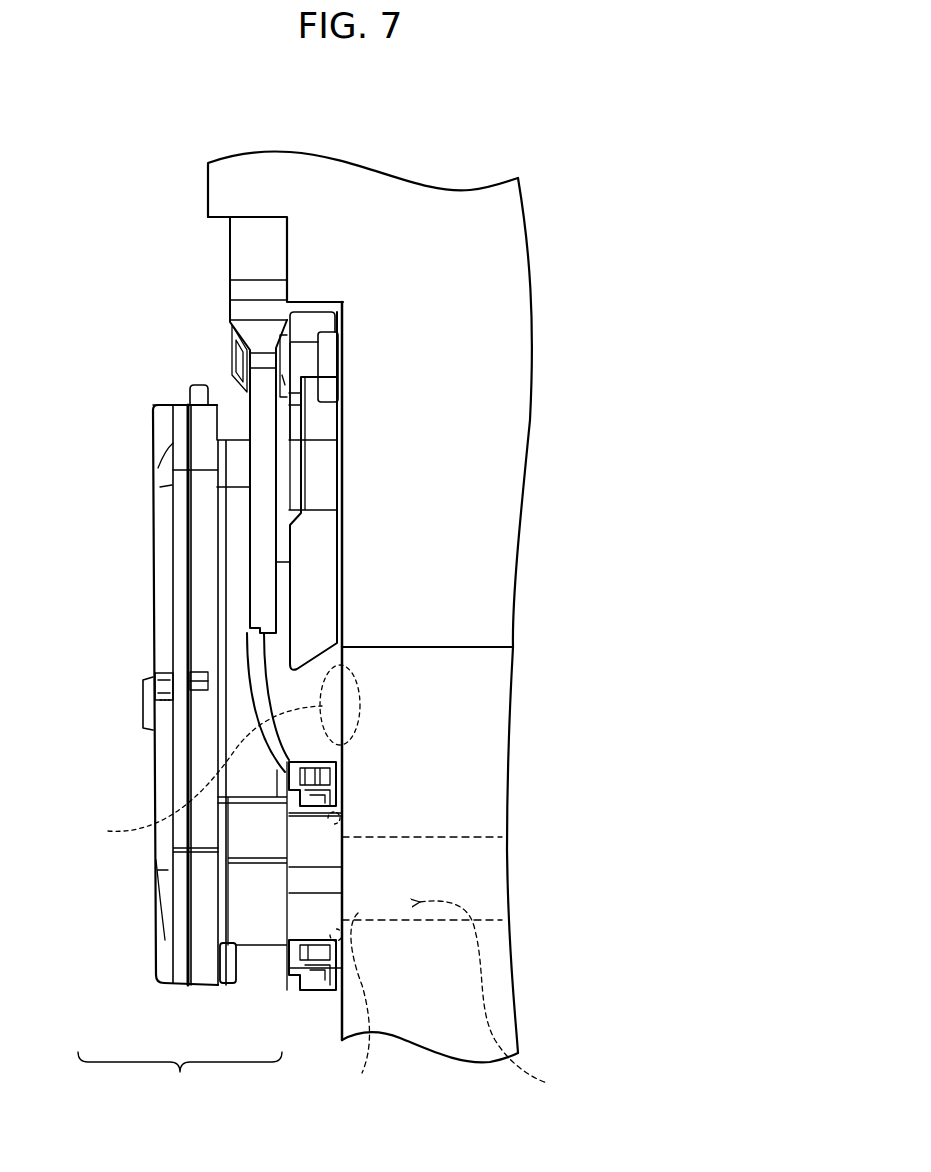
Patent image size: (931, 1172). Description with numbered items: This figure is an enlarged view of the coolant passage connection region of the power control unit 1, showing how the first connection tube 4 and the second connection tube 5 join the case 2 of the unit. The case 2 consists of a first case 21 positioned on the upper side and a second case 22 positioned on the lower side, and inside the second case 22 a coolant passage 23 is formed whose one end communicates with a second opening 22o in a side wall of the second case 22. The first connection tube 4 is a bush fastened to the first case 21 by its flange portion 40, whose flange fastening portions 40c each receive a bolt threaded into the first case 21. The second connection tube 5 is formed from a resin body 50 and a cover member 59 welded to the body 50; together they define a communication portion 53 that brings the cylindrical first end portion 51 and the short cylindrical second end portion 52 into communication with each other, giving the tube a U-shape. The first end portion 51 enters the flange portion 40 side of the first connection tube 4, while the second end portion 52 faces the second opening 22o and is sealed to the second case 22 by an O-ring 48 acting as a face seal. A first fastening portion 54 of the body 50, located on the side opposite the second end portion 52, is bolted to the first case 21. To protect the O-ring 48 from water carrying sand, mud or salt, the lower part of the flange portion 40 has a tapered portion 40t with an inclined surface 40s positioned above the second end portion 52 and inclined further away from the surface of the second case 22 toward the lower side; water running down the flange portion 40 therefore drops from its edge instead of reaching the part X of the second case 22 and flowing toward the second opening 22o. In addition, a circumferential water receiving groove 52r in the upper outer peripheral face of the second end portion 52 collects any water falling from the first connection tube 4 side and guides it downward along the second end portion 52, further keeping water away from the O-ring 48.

The power control unit 1 is at (178, 180).
The case 2 is at (598, 592).
The first case 21 is at (512, 602).
The second case 22 is at (512, 686).
The second opening 22o is at (364, 1010).
The coolant passage 23 is at (503, 999).
The first connection tube 4 is at (255, 488).
The second connection tube 5 is at (180, 1080).
The flange portion 40 is at (315, 545).
The flange fastening portion 40c is at (320, 415).
The inclined surface 40s is at (345, 660).
The tapered portion 40t is at (285, 655).
The O-ring 48 is at (342, 820).
The body 50 is at (253, 937).
The first end portion 51 is at (313, 453).
The second end portion 52 is at (322, 850).
The water receiving groove 52r is at (320, 773).
The communication portion 53 is at (143, 838).
The first fastening portion 54 is at (258, 253).
The cover member 59 is at (165, 945).
The part X is at (203, 775).